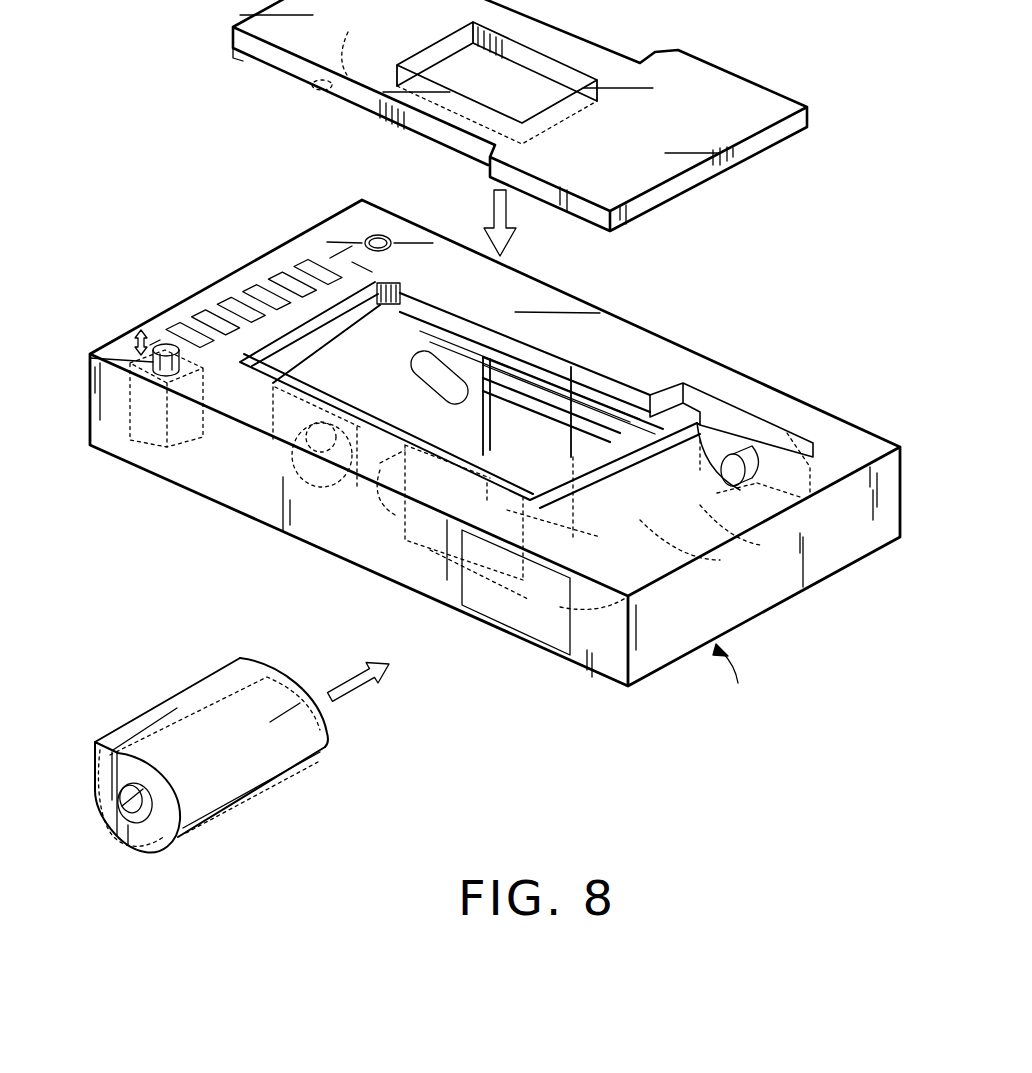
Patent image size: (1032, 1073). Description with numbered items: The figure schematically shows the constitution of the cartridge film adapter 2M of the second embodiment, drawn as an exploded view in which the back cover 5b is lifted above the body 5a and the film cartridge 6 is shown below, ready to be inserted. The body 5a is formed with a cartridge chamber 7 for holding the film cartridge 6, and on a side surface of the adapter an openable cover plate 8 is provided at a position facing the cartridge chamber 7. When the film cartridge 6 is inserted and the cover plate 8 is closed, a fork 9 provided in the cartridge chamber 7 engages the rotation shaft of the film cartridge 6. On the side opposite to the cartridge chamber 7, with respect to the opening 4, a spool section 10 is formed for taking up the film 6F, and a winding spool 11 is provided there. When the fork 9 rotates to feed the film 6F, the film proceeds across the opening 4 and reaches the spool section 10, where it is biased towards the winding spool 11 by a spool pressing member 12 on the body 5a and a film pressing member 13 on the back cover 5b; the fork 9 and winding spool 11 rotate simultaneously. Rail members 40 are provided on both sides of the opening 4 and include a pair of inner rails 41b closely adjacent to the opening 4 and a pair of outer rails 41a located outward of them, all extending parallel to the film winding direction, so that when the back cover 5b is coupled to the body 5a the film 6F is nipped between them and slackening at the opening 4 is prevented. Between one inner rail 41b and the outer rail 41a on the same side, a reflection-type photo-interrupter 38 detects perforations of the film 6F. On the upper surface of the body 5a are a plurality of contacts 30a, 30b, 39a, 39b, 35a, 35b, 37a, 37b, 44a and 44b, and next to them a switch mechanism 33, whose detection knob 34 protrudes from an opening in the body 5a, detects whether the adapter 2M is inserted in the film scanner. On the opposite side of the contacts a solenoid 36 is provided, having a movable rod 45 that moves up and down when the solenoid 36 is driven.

The cartridge film adapter 2M is at (793, 703).
The opening 4 is at (520, 452).
The body 5a is at (748, 600).
The back cover 5b is at (707, 82).
The film cartridge 6 is at (242, 755).
The film 6F is at (327, 743).
The cartridge chamber 7 is at (737, 544).
The cover plate 8 is at (540, 630).
The fork 9 is at (760, 447).
The spool section 10 is at (410, 336).
The winding spool 11 is at (300, 457).
The spool pressing member 12 is at (382, 487).
The film pressing member 13 is at (340, 45).
The contact 30a is at (332, 258).
The contact 30b is at (356, 262).
The switch mechanism 33 is at (392, 240).
The detection knob 34 is at (588, 349).
The contact 35a is at (223, 307).
The contact 35b is at (249, 294).
The solenoid 36 is at (150, 427).
The contact 37a is at (172, 332).
The contact 37b is at (197, 319).
The reflection-type photo-interrupter 38 is at (522, 352).
The contact 39a is at (275, 281).
The contact 39b is at (300, 268).
The rail members 40 is at (544, 482).
The outer rail 41a is at (636, 380).
The inner rail 41b is at (668, 390).
The contact 44a is at (134, 335).
The contact 44b is at (165, 343).
The movable rod 45 is at (150, 362).